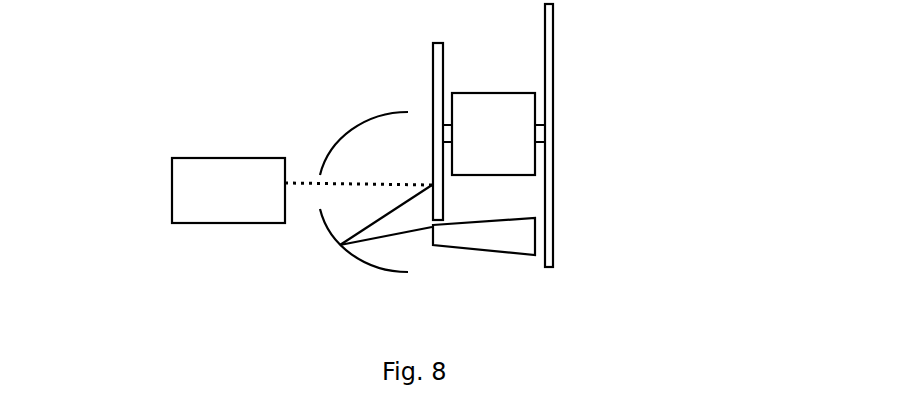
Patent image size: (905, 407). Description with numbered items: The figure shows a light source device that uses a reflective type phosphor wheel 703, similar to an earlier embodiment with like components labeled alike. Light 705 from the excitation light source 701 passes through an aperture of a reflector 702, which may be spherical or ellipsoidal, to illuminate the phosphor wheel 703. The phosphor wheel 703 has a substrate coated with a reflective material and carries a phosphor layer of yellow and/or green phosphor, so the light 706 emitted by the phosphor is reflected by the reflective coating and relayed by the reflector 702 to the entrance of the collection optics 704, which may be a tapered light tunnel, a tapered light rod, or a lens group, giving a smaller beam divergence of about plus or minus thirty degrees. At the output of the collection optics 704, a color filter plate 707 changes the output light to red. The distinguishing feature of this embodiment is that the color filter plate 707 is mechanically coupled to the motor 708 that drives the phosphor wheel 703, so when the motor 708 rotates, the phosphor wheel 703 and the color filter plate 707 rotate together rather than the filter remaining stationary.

The excitation light source 701 is at (238, 226).
The reflector 702 is at (343, 267).
The phosphor wheel 703 is at (418, 63).
The collection optics 704 is at (527, 258).
The light from the excitation light source 705 is at (299, 173).
The light emitted by the phosphor material 706 is at (407, 242).
The color filter plate 707 is at (560, 40).
The motor 708 is at (500, 88).